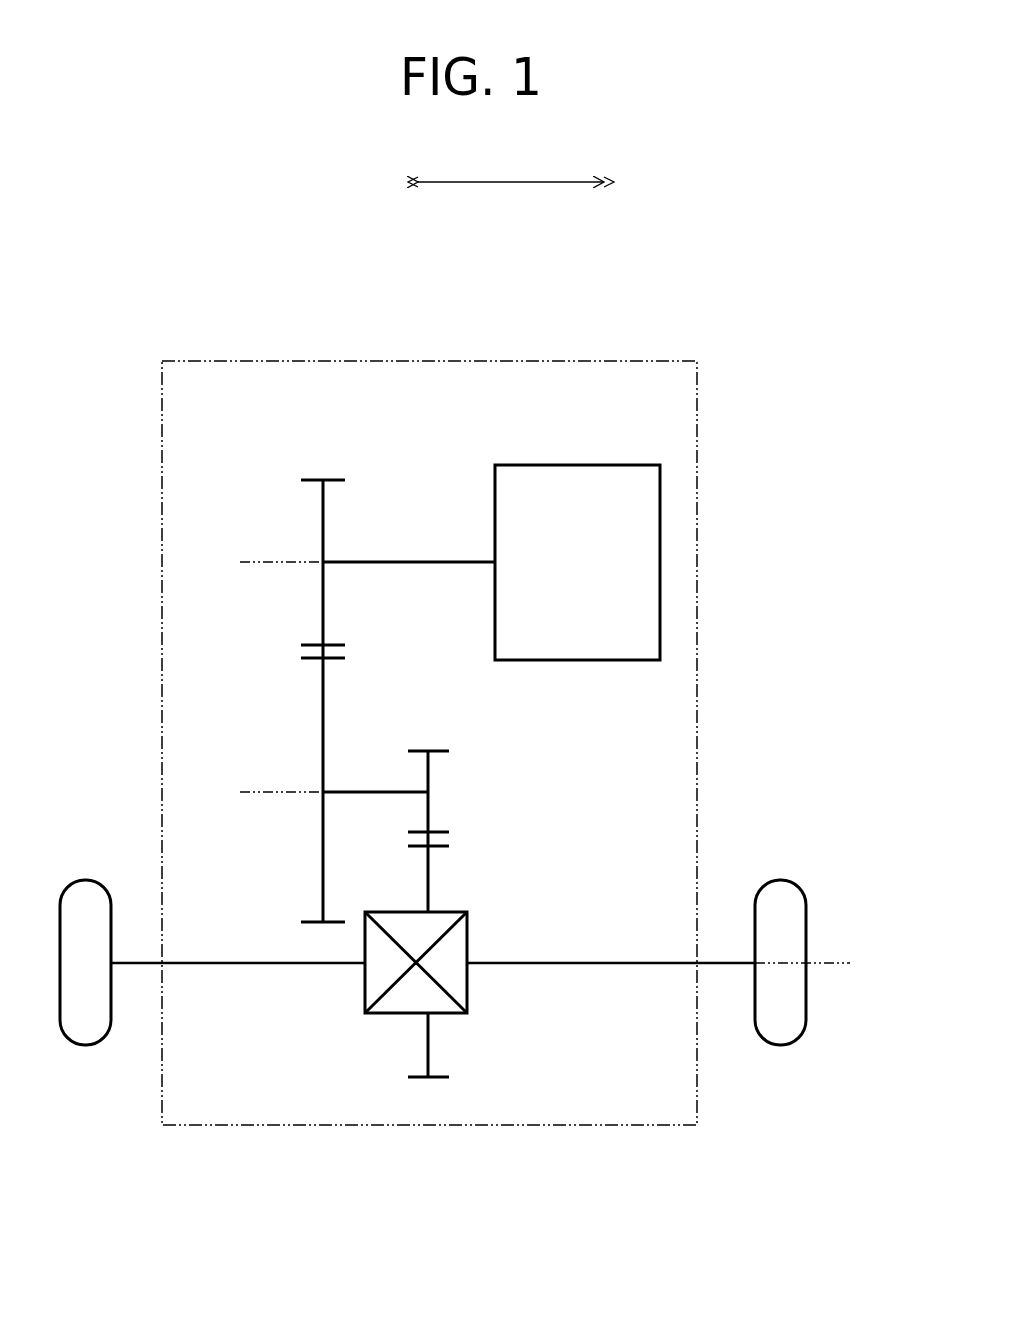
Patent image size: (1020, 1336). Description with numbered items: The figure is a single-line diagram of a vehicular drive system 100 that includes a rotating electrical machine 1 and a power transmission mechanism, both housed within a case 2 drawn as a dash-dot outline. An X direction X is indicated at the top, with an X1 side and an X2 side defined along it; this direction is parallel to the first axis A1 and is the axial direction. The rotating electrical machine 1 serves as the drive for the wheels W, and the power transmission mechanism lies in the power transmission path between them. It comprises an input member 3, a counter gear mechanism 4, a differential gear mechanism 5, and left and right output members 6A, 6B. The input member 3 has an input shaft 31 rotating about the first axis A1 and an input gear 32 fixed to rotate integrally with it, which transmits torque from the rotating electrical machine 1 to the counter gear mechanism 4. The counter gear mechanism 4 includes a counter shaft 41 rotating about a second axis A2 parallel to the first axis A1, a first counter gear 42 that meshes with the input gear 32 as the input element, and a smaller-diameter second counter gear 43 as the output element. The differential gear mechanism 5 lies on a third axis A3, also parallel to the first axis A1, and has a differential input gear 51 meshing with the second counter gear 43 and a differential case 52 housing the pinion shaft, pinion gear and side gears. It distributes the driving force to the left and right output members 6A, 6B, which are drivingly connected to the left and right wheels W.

The vehicular drive system 100 is at (727, 310).
The rotating electrical machine 1 is at (622, 465).
The case 2 is at (699, 423).
The input member 3 is at (443, 460).
The input shaft 31 is at (402, 560).
The input gear 32 is at (318, 478).
The counter gear mechanism 4 is at (488, 768).
The counter shaft 41 is at (377, 790).
The first counter gear 42 is at (318, 923).
The second counter gear 43 is at (440, 750).
The differential gear mechanism 5 is at (476, 895).
The differential input gear 51 is at (422, 1080).
The differential case 52 is at (373, 1014).
The left output member 6A is at (220, 966).
The right output member 6B is at (637, 966).
The wheels W is at (88, 890).
The first axis A1 is at (262, 562).
The second axis A2 is at (263, 792).
The third axis A3 is at (822, 965).
The X direction X is at (511, 173).